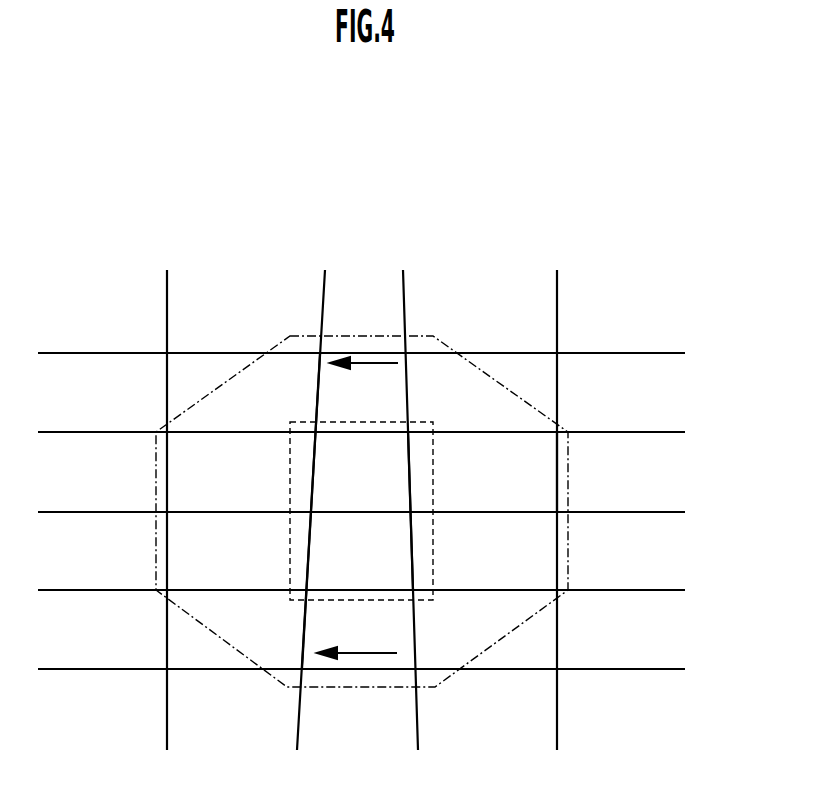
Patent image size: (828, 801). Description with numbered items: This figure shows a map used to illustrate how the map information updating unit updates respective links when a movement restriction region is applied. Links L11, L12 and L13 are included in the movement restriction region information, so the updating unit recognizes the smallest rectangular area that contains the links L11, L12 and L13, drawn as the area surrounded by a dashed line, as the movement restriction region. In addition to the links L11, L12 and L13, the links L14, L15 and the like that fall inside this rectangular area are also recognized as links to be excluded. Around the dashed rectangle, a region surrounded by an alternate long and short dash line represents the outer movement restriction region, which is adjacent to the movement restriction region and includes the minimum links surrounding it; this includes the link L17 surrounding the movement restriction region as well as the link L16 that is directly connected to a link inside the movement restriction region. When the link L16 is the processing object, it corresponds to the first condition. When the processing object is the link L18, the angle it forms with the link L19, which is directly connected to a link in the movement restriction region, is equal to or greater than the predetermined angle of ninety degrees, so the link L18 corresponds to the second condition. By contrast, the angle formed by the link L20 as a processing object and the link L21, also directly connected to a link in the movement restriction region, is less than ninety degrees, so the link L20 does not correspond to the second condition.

The link L11 is at (408, 475).
The link L12 is at (413, 553).
The link L13 is at (313, 475).
The link L14 is at (307, 552).
The link L15 is at (358, 430).
The link L16 is at (463, 430).
The link L17 is at (557, 468).
The link L18 is at (358, 350).
The link L19 is at (316, 393).
The link L20 is at (359, 688).
The link L21 is at (292, 636).